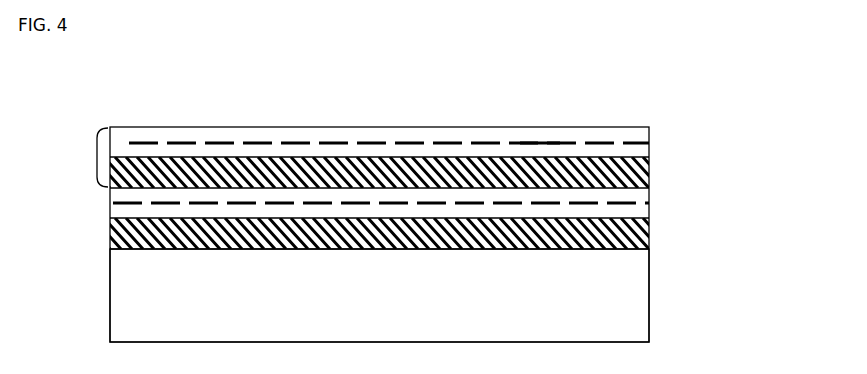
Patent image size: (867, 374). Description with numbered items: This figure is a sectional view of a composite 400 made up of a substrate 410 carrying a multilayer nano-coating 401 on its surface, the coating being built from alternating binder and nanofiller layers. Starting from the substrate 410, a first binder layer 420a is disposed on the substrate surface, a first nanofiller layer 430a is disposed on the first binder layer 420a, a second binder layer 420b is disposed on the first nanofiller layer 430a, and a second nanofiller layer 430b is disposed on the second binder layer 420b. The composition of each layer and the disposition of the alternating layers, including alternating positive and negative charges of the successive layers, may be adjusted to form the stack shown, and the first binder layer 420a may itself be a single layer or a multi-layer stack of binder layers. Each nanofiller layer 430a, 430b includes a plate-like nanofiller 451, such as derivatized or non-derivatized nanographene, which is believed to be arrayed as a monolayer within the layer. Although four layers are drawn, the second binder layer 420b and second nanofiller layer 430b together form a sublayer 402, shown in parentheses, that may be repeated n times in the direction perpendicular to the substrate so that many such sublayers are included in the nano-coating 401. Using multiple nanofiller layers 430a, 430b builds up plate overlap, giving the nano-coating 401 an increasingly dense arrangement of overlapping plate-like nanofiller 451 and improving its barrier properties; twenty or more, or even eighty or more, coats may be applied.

The composite 400 is at (93, 128).
The multilayer nano-coating 401 is at (771, 118).
The sublayer 402 is at (717, 126).
The substrate 410 is at (649, 250).
The first binder layer 420a is at (649, 219).
The second binder layer 420b is at (649, 158).
The first nanofiller layer 430a is at (649, 189).
The second nanofiller layer 430b is at (649, 128).
The plate-like nanofiller 451 is at (520, 142).